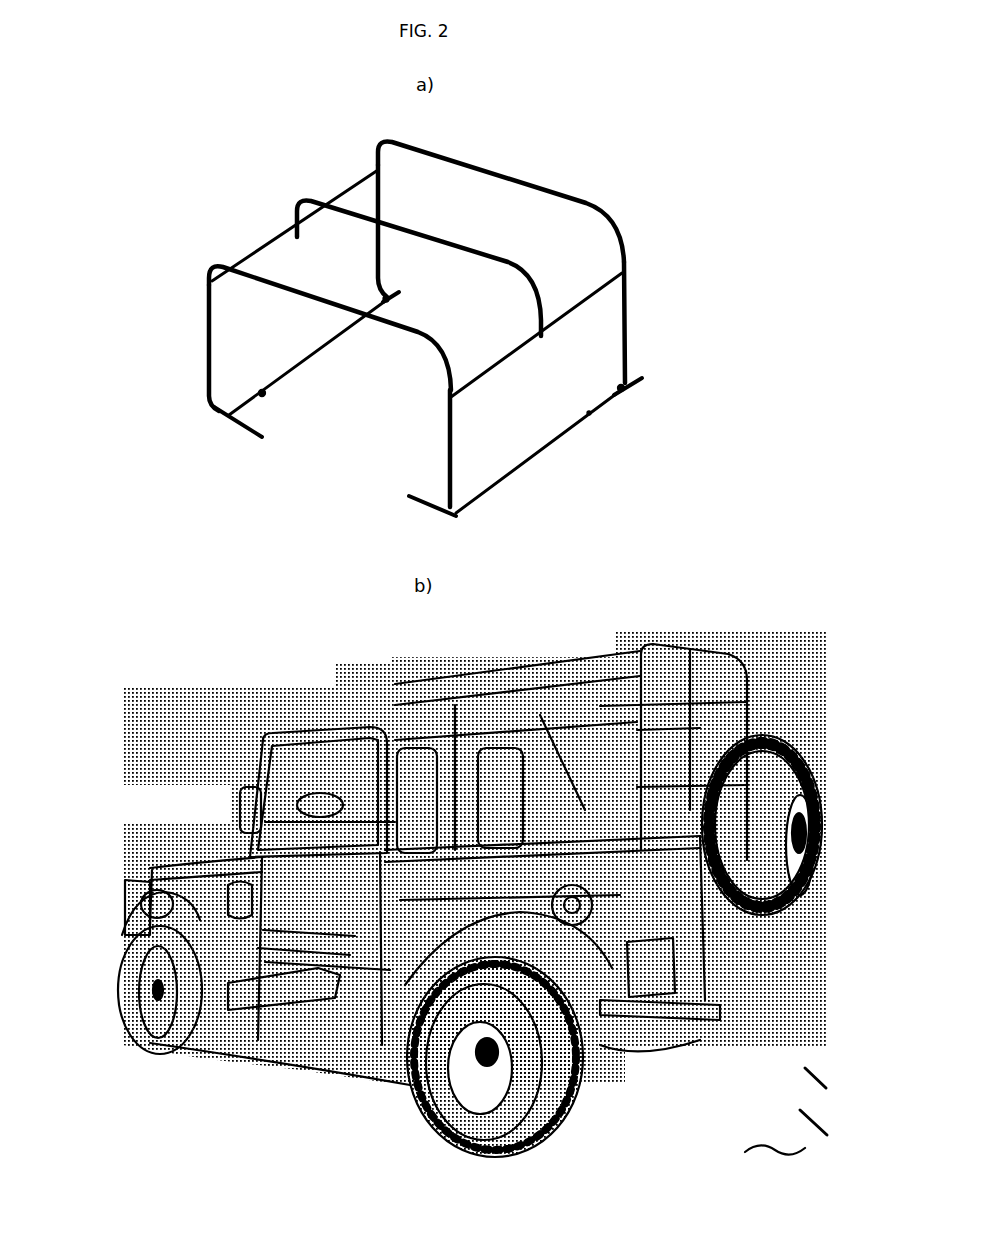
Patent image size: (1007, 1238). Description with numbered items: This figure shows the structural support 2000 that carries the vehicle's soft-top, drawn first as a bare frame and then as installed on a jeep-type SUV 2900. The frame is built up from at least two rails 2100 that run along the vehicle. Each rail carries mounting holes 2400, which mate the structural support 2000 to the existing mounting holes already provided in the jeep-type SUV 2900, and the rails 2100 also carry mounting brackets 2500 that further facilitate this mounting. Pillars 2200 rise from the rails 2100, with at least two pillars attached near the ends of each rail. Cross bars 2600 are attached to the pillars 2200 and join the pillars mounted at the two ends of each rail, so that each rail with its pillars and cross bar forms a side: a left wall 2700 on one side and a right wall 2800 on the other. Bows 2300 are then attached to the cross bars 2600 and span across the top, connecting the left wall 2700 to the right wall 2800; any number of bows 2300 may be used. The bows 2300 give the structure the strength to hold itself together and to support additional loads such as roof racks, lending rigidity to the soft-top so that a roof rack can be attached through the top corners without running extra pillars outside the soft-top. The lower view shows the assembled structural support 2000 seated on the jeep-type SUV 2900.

The structural support 2000 is at (415, 391).
The rails 2100 is at (426, 406).
The pillars 2200 is at (448, 336).
The bows 2300 is at (416, 265).
The mounting holes 2400 is at (592, 419).
The mounting brackets 2500 is at (428, 404).
The cross bars 2600 is at (402, 283).
The left wall 2700 is at (153, 348).
The right wall 2800 is at (669, 322).
The jeep-type SUV 2900 is at (431, 893).